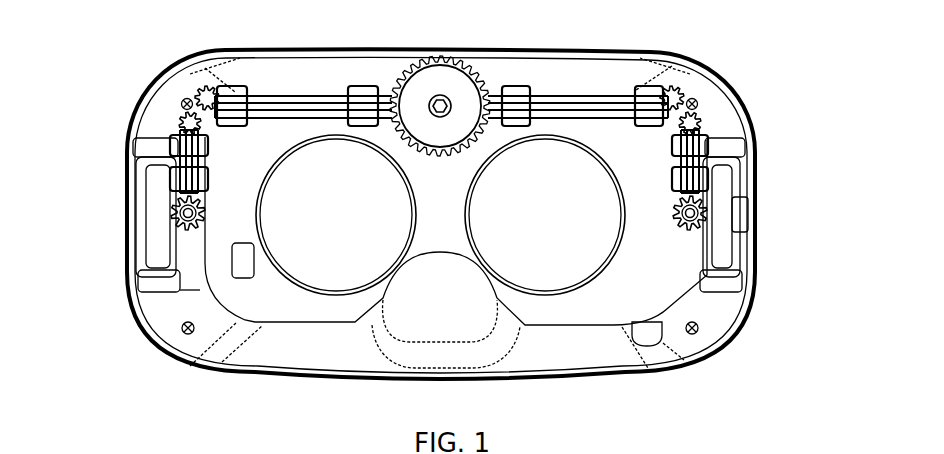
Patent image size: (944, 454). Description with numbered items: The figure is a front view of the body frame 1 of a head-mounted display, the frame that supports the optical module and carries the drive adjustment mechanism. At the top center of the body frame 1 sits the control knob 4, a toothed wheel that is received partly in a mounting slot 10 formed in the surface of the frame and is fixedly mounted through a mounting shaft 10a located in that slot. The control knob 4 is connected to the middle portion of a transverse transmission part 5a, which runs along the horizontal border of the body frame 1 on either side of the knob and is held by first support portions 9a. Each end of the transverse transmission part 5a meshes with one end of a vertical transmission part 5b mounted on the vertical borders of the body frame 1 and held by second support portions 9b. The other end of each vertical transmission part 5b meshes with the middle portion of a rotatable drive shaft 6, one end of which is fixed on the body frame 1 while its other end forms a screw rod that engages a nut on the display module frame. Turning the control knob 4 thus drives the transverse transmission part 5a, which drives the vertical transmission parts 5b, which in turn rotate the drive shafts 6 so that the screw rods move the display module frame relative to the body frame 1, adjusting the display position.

The body frame 1 is at (728, 92).
The control knob 4 is at (437, 130).
The transverse transmission part 5a is at (288, 107).
The vertical transmission part 5b is at (196, 167).
The drive shaft 6 is at (189, 233).
The first support portion 9a is at (362, 86).
The second support portion 9b is at (172, 180).
The mounting slot 10 is at (420, 48).
The mounting shaft 10a is at (443, 97).